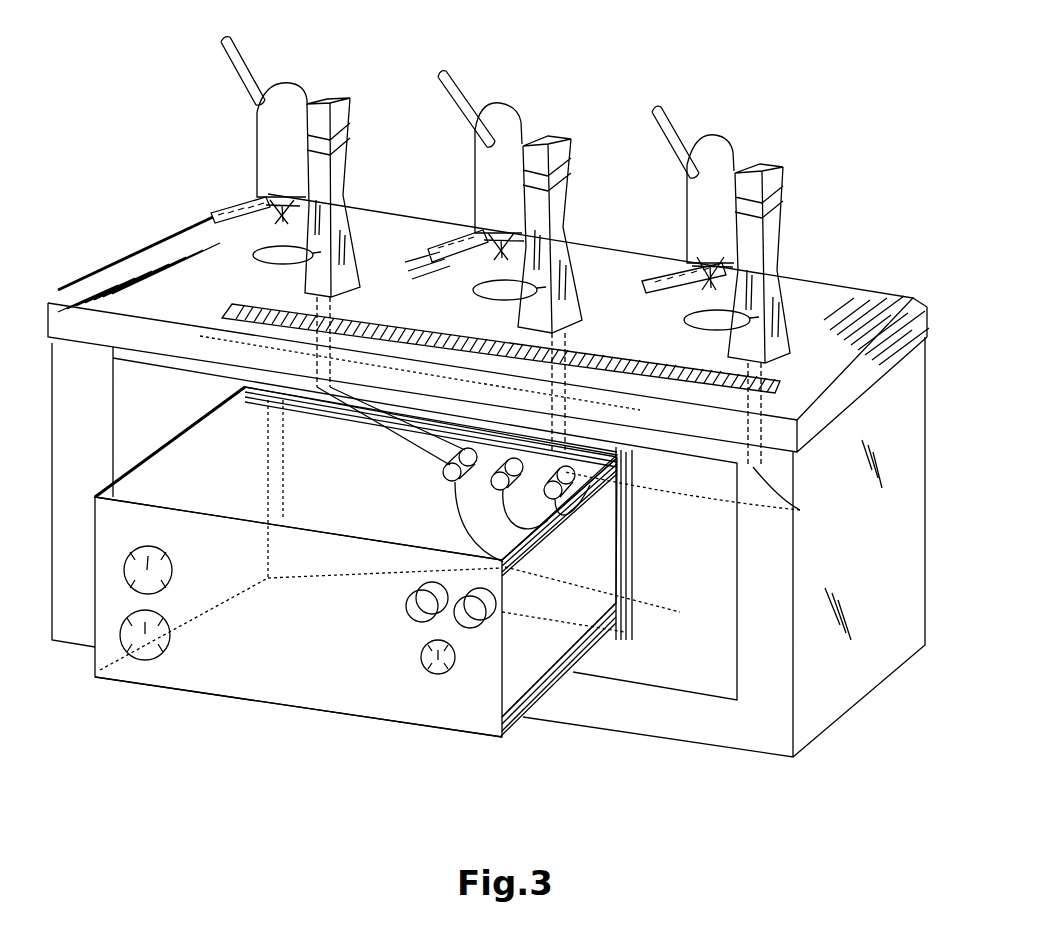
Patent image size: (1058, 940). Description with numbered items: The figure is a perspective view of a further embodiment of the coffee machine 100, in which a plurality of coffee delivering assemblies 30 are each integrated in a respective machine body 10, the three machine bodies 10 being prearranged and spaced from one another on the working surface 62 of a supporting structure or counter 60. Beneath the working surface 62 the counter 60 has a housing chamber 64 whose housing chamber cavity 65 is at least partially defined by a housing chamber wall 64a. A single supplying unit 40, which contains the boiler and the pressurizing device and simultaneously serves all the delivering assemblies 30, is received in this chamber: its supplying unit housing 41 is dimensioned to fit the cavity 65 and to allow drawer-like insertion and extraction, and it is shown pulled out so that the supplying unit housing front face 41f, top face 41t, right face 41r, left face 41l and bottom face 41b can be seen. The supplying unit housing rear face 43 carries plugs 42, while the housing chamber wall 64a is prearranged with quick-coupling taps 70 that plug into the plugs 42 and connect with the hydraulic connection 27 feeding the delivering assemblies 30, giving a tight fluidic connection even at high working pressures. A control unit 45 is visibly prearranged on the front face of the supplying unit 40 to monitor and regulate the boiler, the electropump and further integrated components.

The coffee machine 100 is at (832, 195).
The counter 60 is at (910, 288).
The working surface 62 is at (813, 300).
The quick-coupling taps 70 is at (193, 336).
The machine body 10 is at (285, 98).
The coffee delivering assembly 30 is at (255, 193).
The hydraulic connection 27 is at (800, 510).
The plugs 42 is at (628, 590).
The supplying unit housing rear face 43 is at (300, 437).
The housing chamber 64 is at (614, 642).
The housing chamber wall 64a is at (293, 448).
The housing chamber cavity 65 is at (250, 390).
The supplying unit 40 is at (376, 588).
The supplying unit housing 41 is at (376, 588).
The supplying unit housing top face 41t is at (363, 483).
The supplying unit housing front face 41f is at (277, 670).
The supplying unit housing left face 41l is at (137, 470).
The supplying unit housing right face 41r is at (390, 587).
The supplying unit housing bottom face 41b is at (390, 727).
The control unit 45 is at (430, 695).